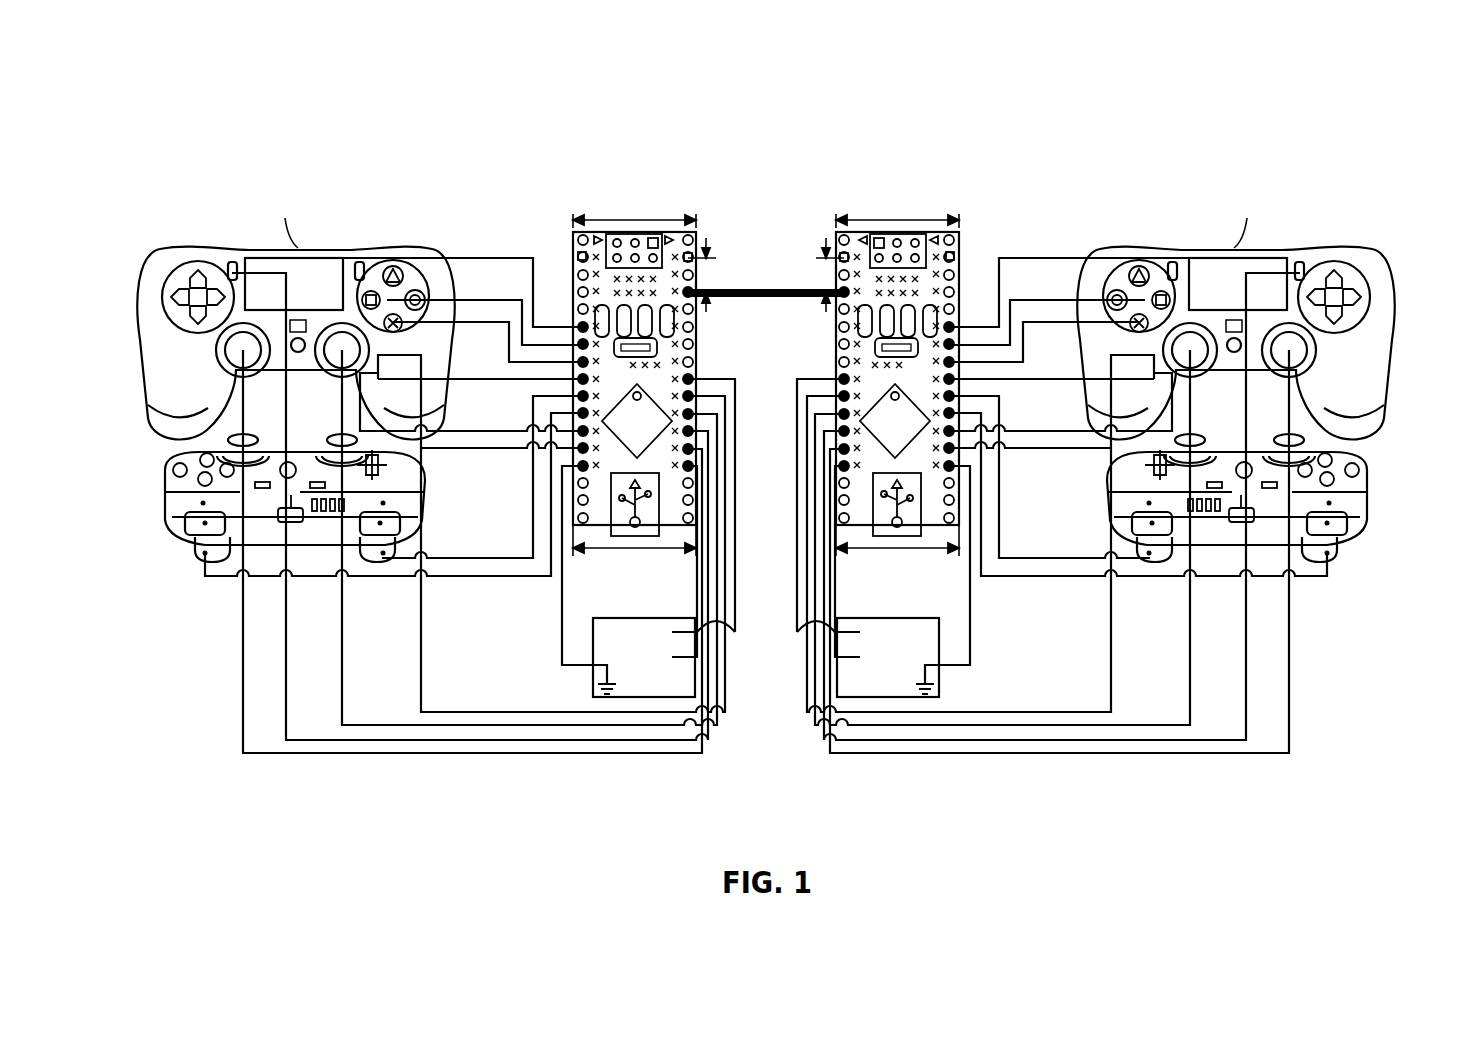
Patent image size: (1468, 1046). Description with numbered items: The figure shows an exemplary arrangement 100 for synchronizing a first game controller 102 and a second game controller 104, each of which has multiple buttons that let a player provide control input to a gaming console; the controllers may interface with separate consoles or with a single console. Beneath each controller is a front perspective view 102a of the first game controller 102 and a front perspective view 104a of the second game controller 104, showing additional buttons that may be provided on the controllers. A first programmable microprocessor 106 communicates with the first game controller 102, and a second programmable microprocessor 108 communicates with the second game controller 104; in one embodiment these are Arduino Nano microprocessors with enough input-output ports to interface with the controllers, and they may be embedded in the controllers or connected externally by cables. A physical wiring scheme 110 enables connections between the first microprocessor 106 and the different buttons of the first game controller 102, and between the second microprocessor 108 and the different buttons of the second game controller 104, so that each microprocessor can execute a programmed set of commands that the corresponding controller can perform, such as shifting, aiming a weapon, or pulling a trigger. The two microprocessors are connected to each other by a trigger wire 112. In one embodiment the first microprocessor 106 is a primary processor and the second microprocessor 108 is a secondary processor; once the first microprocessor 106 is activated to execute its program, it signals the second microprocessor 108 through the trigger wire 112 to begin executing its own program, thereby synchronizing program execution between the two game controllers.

The arrangement 100 is at (256, 140).
The first game controller 102 is at (158, 322).
The front perspective view of first game controller 102a is at (152, 500).
The second game controller 104 is at (1374, 322).
The front perspective view of second game controller 104a is at (1380, 500).
The first programmable microprocessor 106 is at (568, 200).
The second programmable microprocessor 108 is at (945, 190).
The physical wiring scheme 110 is at (1083, 755).
The trigger wire 112 is at (762, 290).